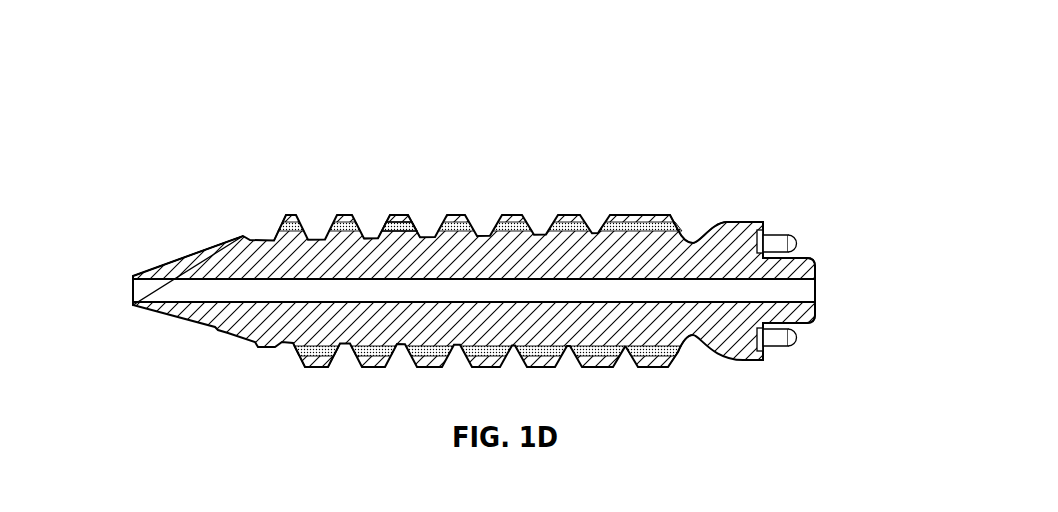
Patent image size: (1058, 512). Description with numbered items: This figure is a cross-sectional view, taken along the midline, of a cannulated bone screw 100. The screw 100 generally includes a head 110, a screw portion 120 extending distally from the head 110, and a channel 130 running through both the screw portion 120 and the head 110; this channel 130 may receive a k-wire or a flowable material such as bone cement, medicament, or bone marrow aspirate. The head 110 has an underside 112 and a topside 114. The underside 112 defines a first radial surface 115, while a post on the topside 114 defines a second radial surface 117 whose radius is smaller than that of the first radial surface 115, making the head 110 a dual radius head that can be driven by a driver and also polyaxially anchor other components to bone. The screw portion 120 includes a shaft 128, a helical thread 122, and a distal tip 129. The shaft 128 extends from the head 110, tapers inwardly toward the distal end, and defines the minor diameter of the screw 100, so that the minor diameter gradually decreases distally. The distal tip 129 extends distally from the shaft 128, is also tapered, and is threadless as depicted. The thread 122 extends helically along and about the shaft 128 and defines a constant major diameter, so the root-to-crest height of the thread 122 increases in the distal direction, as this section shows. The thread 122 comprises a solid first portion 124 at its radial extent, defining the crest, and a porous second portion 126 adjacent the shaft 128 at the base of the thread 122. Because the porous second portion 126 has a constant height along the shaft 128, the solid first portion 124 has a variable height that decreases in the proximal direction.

The cannulated bone screw 100 is at (138, 78).
The head 110 is at (783, 205).
The underside 112 is at (710, 362).
The topside 114 is at (817, 325).
The first radial surface 115 is at (725, 223).
The second radial surface 117 is at (813, 262).
The screw portion 120 is at (397, 120).
The helical thread 122 is at (377, 212).
The first portion 124 is at (407, 217).
The second portion 126 is at (417, 228).
The shaft 128 is at (355, 325).
The distal tip 129 is at (195, 252).
The channel 130 is at (133, 287).